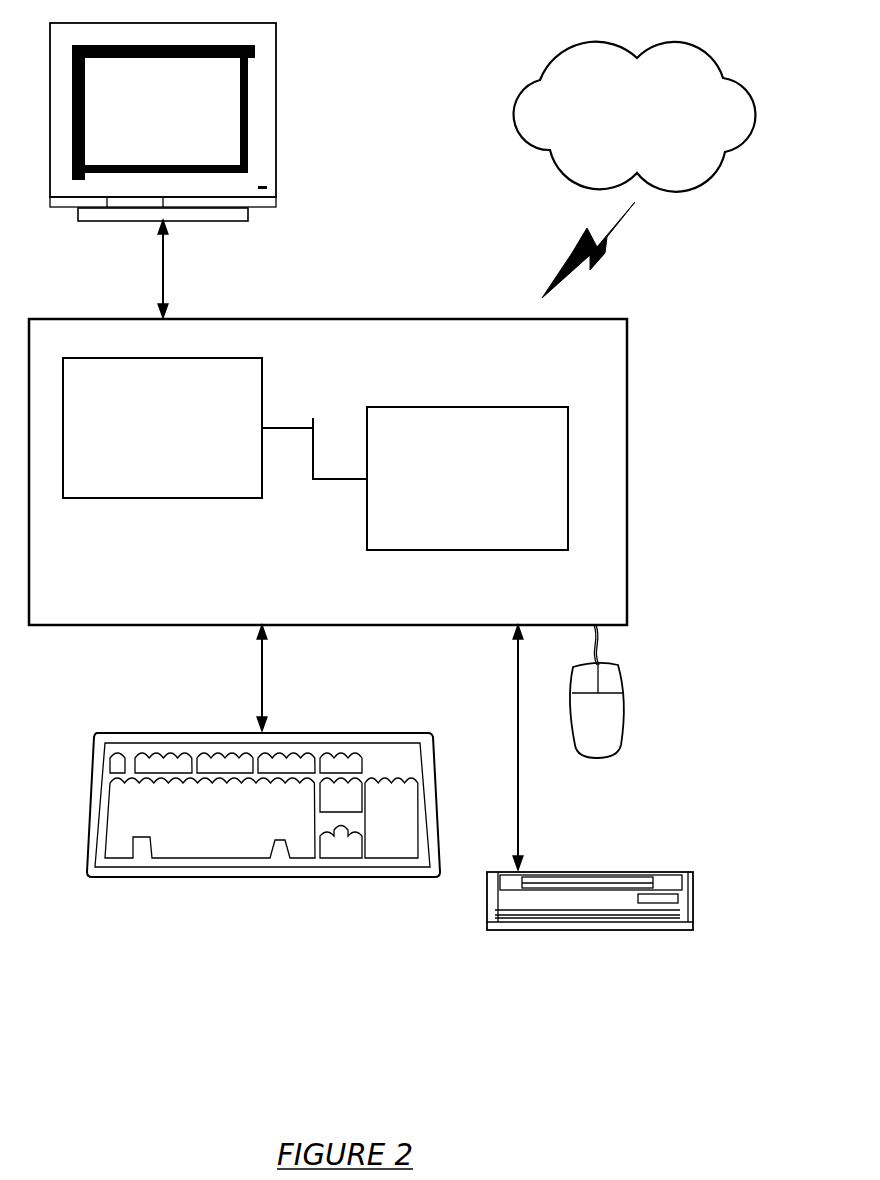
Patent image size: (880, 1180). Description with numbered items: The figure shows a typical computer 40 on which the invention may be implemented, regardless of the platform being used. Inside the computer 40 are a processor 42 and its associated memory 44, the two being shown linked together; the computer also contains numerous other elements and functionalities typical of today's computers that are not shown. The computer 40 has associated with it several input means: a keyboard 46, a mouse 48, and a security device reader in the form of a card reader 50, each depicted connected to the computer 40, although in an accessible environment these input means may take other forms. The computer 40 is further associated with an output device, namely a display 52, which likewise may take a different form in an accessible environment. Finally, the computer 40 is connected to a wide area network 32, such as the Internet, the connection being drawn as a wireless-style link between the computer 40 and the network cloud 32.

The wide area network 32 is at (537, 78).
The computer 40 is at (628, 513).
The processor 42 is at (168, 498).
The memory 44 is at (452, 405).
The keyboard 46 is at (192, 826).
The mouse 48 is at (583, 741).
The card reader 50 is at (697, 902).
The display 52 is at (148, 127).